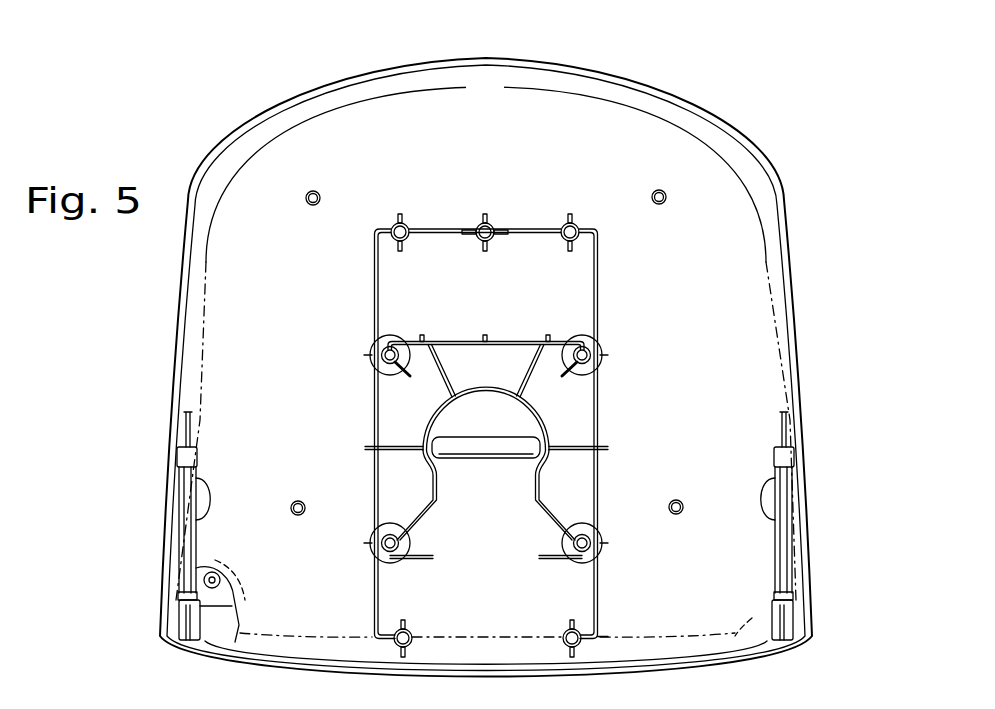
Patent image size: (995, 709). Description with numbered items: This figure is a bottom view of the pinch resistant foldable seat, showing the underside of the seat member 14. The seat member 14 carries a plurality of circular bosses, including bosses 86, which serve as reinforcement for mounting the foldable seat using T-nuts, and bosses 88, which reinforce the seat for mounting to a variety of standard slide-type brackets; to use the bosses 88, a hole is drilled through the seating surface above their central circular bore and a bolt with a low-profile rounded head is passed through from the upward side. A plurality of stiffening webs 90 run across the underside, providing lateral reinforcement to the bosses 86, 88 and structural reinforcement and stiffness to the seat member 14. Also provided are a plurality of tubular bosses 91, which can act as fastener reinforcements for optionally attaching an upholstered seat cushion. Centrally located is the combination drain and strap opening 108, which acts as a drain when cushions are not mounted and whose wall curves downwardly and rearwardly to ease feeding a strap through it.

The seat member 14 is at (769, 122).
The bosses 86 is at (384, 367).
The bosses 88 is at (404, 223).
The stiffening webs 90 is at (378, 310).
The tubular bosses 91 is at (319, 192).
The combination drain and strap opening 108 is at (486, 461).